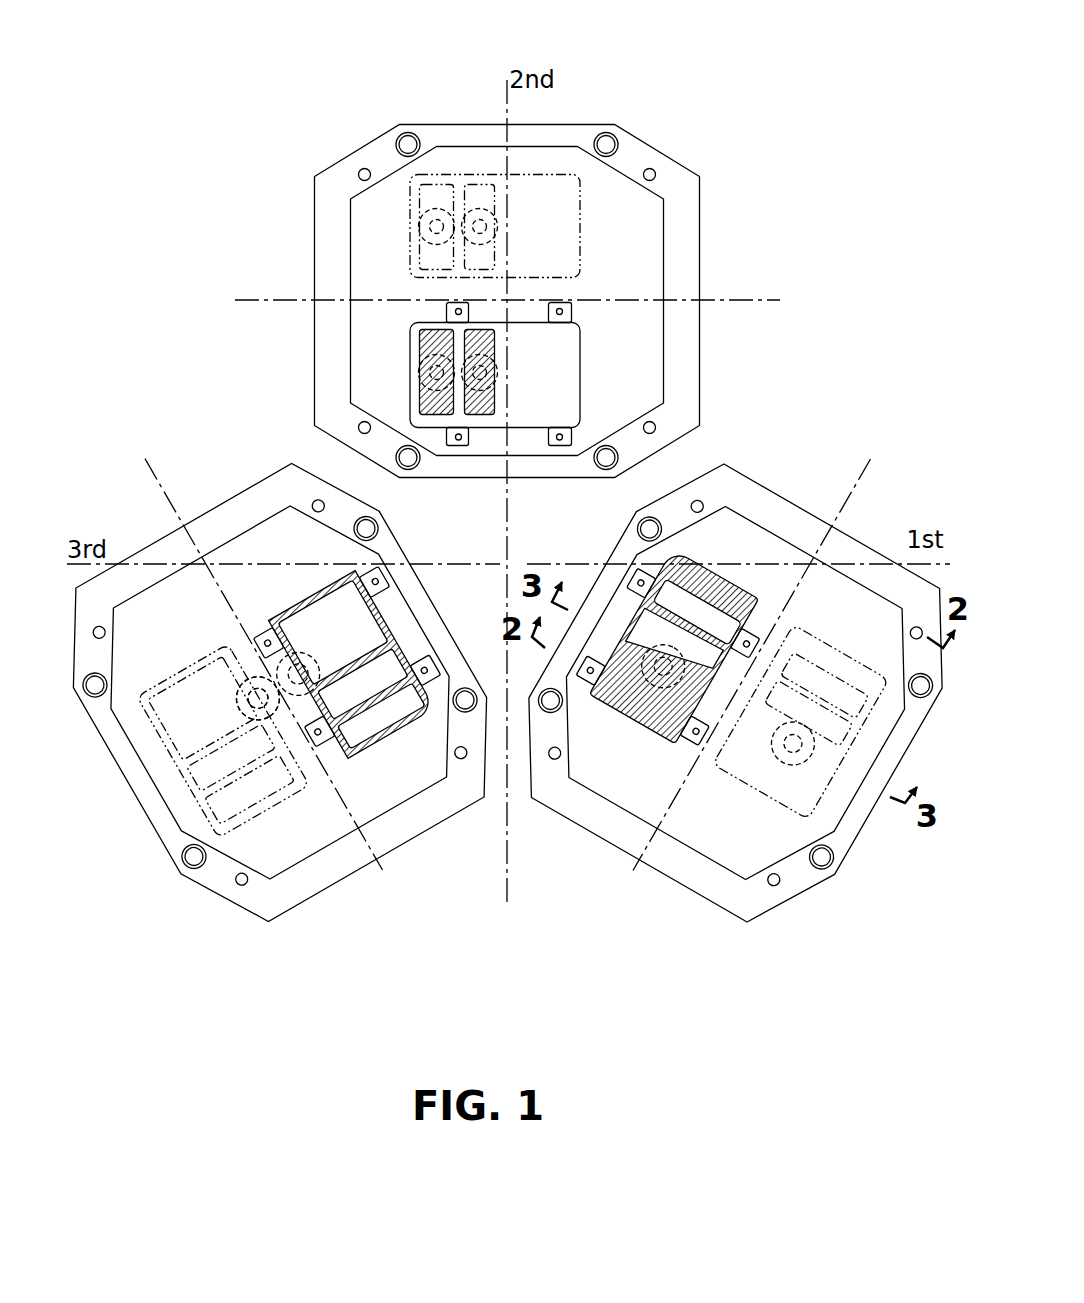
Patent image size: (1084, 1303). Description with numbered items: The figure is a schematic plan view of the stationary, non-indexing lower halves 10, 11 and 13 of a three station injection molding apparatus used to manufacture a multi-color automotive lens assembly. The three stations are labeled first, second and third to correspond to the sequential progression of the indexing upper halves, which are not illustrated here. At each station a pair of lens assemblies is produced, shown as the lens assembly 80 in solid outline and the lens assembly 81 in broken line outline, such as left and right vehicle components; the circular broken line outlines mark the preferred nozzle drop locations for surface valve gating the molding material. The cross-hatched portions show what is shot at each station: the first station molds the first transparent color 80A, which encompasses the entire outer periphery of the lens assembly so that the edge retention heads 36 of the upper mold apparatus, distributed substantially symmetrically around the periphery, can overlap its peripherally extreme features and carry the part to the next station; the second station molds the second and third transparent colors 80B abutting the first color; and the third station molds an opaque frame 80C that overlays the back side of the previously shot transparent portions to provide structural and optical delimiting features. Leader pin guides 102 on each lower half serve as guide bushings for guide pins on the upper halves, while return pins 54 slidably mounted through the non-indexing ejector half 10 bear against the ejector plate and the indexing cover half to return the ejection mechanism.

The non-indexing ejector half 10 is at (564, 301).
The stationary lower half 11 is at (692, 246).
The stationary lower half 13 is at (258, 485).
The edge retention head 36 is at (716, 573).
The return pin 54 is at (911, 633).
The multi-color lens assembly 80 is at (512, 598).
The first transparent color portion 80A is at (691, 673).
The second and third transparent colors 80B is at (470, 345).
The opaque frame 80C is at (403, 658).
The lens assembly 81 is at (460, 172).
The leader pin guide 102 is at (928, 698).